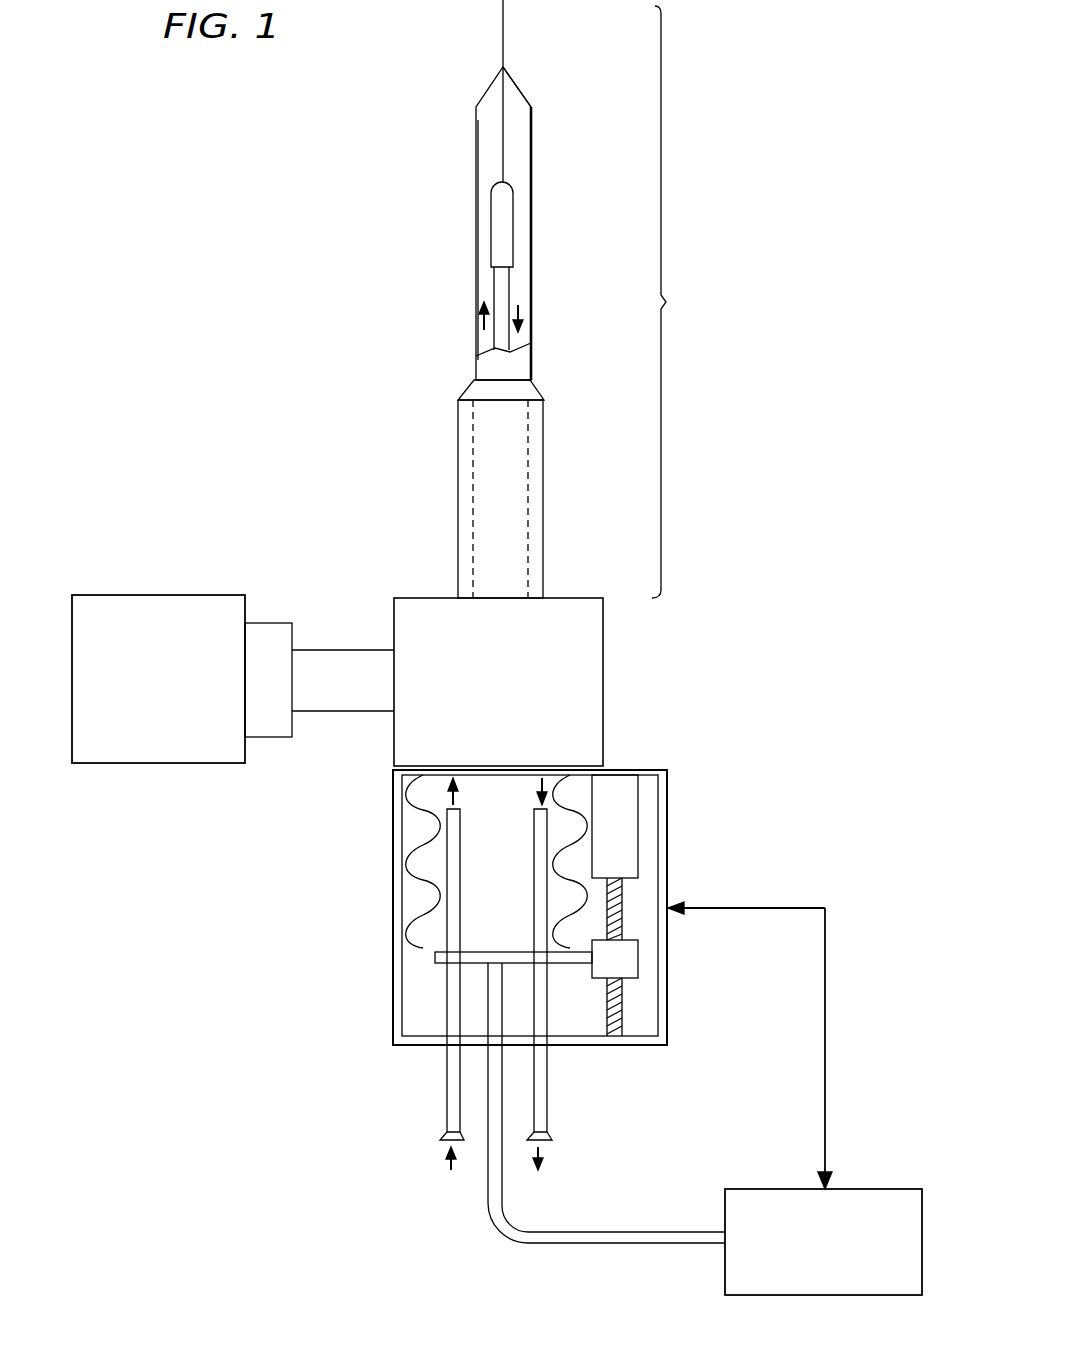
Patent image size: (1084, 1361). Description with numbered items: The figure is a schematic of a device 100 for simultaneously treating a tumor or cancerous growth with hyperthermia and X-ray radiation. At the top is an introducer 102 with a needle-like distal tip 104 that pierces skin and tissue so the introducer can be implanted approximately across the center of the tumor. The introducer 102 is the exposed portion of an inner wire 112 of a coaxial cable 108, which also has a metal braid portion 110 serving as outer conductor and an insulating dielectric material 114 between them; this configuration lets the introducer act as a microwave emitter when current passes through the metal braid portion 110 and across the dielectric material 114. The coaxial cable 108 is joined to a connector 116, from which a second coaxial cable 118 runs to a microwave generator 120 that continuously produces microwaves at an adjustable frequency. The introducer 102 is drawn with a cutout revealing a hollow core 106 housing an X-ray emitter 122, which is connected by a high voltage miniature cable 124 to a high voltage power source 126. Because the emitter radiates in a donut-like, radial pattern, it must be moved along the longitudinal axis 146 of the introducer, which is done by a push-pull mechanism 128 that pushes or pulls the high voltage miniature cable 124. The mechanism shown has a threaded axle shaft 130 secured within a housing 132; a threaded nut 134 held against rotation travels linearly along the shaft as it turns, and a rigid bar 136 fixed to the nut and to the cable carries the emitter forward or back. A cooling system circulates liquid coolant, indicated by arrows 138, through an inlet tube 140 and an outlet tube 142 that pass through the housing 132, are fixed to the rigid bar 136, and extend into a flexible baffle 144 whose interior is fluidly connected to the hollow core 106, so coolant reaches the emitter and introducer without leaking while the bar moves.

The device 100 is at (850, 522).
The introducer 102 is at (533, 163).
The distal tip 104 is at (518, 85).
The hollow core 106 is at (490, 145).
The coaxial cable 108 is at (680, 302).
The metal braid portion 110 is at (520, 506).
The inner wire 112 is at (470, 438).
The insulating dielectric material 114 is at (520, 388).
The connector 116 is at (588, 690).
The second coaxial cable 118 is at (338, 662).
The microwave generator 120 is at (155, 604).
The X-ray emitter 122 is at (513, 228).
The high voltage miniature cable 124 is at (494, 292).
The high voltage power source 126 is at (870, 1189).
The push-pull mechanism 128 is at (597, 907).
The threaded axle shaft 130 is at (622, 1005).
The housing 132 is at (668, 817).
The threaded nut 134 is at (630, 963).
The rigid bar 136 is at (435, 956).
The liquid coolant 138 is at (525, 310).
The inlet tube 140 is at (446, 1094).
The outlet tube 142 is at (546, 1097).
The baffle 144 is at (403, 880).
The longitudinal axis 146 is at (502, 33).